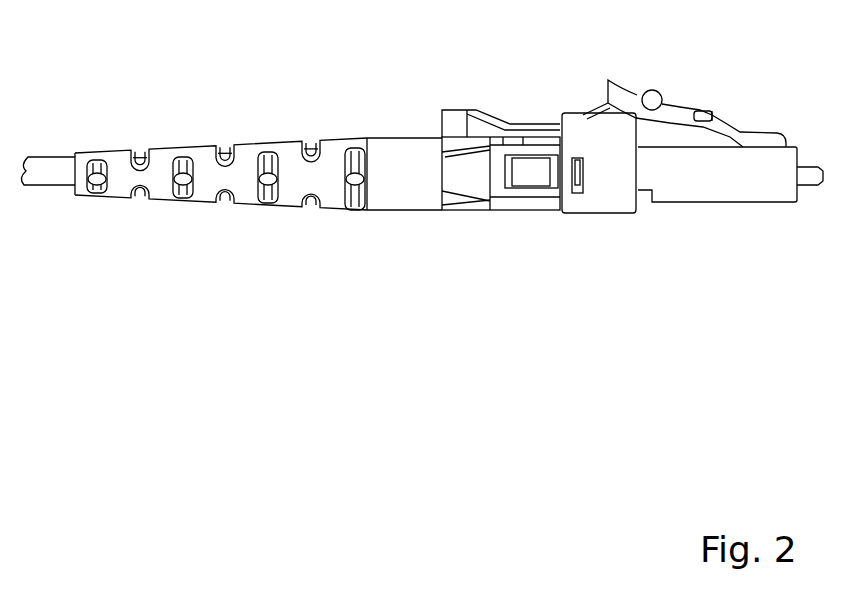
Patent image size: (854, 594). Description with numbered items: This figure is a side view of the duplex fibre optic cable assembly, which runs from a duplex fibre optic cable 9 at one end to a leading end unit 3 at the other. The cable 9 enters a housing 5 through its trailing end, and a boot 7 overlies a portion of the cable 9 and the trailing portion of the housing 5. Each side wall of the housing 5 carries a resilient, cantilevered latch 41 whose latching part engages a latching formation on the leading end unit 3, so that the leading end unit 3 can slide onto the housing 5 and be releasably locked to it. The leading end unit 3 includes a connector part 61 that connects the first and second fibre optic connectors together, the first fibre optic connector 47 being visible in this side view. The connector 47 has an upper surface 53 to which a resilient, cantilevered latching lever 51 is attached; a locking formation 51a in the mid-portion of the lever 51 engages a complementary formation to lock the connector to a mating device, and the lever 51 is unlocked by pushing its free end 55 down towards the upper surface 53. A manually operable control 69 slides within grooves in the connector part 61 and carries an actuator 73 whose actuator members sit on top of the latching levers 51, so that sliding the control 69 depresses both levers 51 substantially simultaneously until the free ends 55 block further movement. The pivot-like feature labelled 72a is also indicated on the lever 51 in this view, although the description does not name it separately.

The duplex fibre optic cable 9 is at (57, 186).
The boot 7 is at (340, 138).
The housing 5 is at (498, 197).
The latch 41 is at (540, 183).
The manually operable control 69 is at (475, 104).
The connector part 61 is at (607, 187).
The actuator 73 is at (597, 104).
The free end 55 is at (622, 95).
The pivot 72a is at (652, 100).
The latching lever 51 is at (686, 106).
The locking formation 51a is at (716, 103).
The upper surface 53 is at (785, 142).
The leading end unit 3 is at (692, 218).
The first fibre optic connector 47 is at (757, 215).